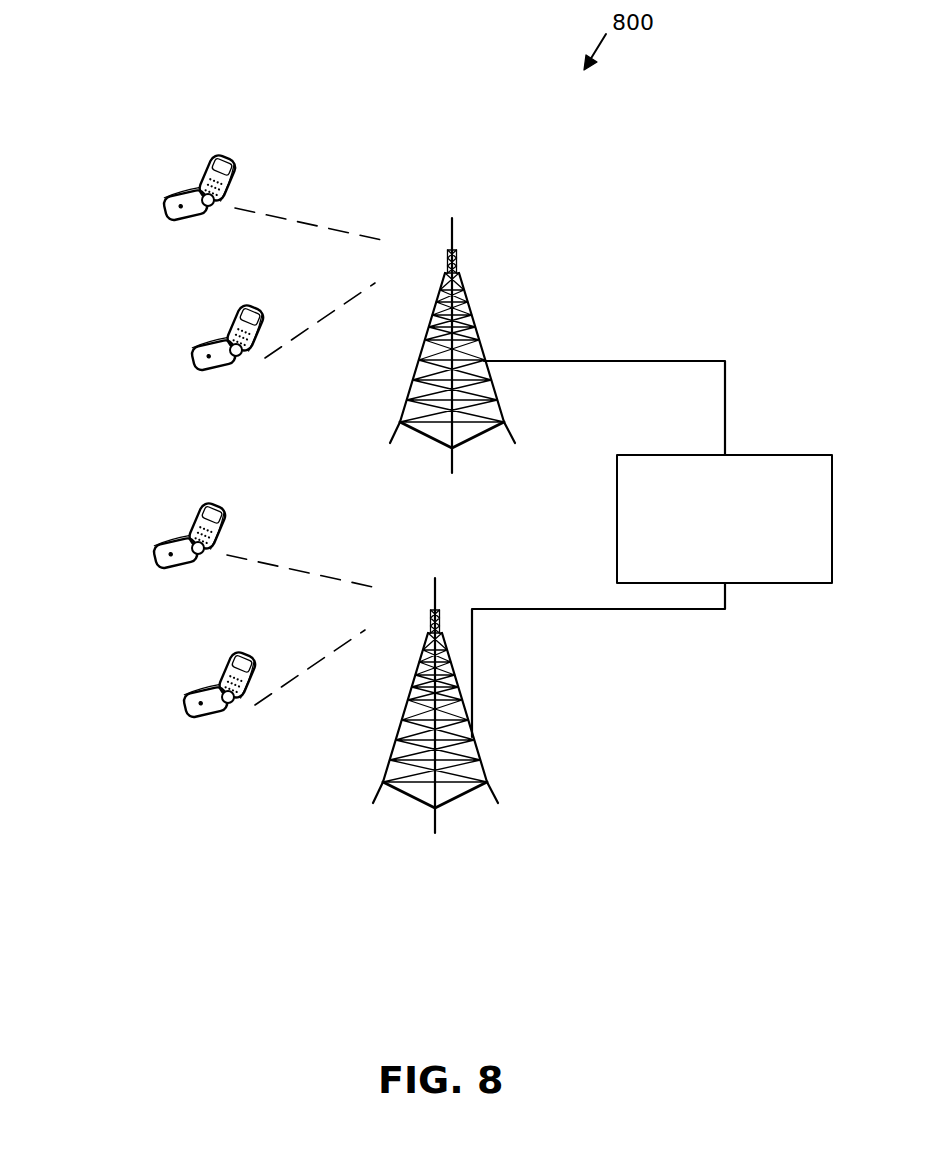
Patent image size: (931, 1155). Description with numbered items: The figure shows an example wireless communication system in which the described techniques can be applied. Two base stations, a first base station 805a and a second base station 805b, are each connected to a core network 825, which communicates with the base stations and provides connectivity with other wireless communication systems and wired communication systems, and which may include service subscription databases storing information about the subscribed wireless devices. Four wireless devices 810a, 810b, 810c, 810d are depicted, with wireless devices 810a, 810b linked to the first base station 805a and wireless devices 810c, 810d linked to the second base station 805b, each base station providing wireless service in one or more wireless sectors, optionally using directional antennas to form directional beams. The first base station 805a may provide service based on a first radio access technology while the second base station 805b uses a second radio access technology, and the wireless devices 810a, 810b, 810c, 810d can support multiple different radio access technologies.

The first base station 805a is at (465, 302).
The second base station 805b is at (438, 611).
The wireless device 810a is at (196, 163).
The wireless device 810b is at (221, 306).
The wireless device 810c is at (133, 527).
The wireless device 810d is at (211, 656).
The core network 825 is at (633, 455).